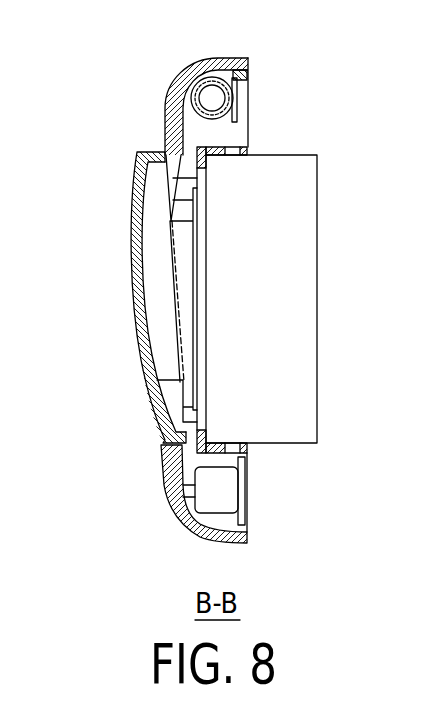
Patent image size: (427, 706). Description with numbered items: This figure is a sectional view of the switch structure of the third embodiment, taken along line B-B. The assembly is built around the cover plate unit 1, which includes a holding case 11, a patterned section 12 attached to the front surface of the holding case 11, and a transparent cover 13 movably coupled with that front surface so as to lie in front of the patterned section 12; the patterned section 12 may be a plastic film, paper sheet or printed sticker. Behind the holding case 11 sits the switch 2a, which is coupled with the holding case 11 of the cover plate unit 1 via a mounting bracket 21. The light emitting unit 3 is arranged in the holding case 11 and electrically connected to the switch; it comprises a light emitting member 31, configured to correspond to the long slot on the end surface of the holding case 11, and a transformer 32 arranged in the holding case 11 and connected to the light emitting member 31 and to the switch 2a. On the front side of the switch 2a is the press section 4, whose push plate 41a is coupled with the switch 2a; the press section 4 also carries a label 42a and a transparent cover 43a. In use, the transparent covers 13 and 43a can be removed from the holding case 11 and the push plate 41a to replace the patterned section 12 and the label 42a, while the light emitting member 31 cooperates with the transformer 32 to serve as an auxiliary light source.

The cover plate unit 1 is at (145, 274).
The holding case 11 is at (183, 80).
The patterned section 12 is at (175, 104).
The transparent cover 13 is at (167, 126).
The switch 2a is at (303, 305).
The mounting bracket 21 is at (213, 147).
The light emitting unit 3 is at (244, 82).
The light emitting member 31 is at (207, 83).
The transformer 32 is at (230, 489).
The press section 4 is at (113, 297).
The push plate 41a is at (137, 183).
The label 42a is at (170, 222).
The transparent cover 43a is at (133, 265).